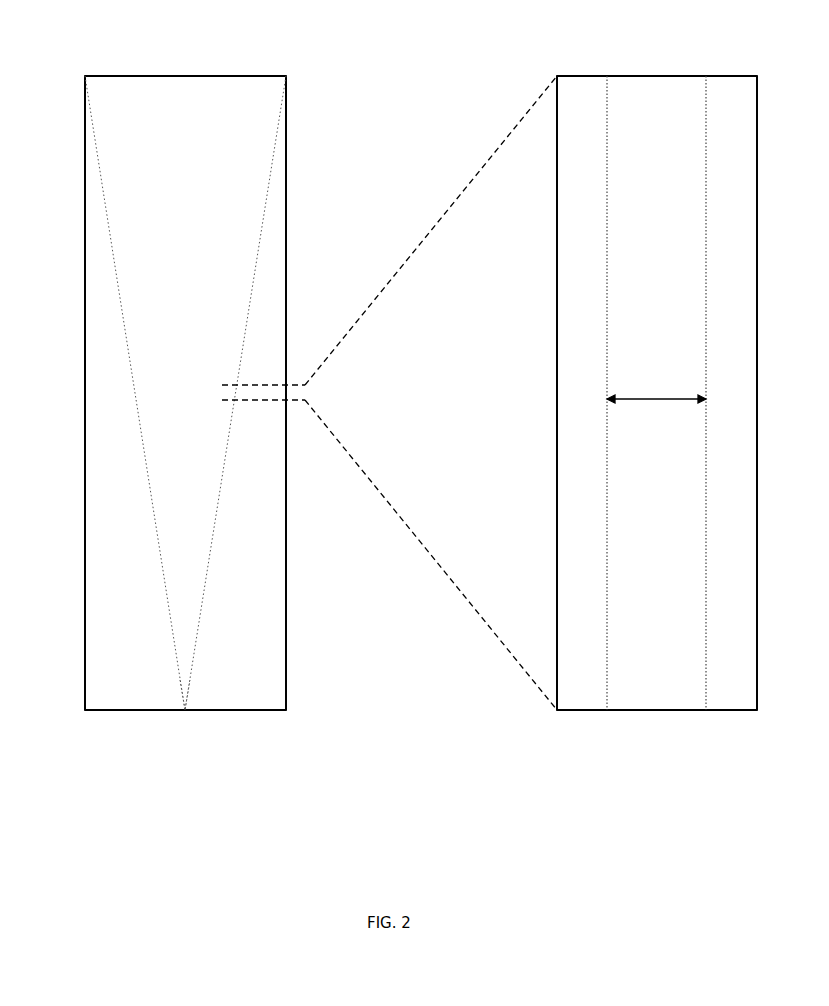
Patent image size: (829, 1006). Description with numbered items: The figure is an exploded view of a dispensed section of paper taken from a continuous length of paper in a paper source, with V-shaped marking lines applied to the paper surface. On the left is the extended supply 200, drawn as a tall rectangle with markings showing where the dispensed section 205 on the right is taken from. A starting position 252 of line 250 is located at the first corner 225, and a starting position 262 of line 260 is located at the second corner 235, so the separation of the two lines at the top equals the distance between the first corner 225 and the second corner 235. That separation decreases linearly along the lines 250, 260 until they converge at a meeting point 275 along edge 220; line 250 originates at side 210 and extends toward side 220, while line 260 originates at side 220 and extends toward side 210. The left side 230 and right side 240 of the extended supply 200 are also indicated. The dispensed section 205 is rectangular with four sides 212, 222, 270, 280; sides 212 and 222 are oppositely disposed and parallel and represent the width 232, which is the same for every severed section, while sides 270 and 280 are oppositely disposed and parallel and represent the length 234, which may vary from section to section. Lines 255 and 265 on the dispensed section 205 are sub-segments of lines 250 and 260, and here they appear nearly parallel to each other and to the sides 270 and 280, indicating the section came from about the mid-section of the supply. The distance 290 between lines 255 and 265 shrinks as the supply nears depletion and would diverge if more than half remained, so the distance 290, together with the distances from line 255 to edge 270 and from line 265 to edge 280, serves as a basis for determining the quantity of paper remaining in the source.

The extended supply 200 is at (80, 711).
The dispensed section 205 is at (555, 712).
The side 210 is at (148, 76).
The side 212 is at (660, 76).
The side 220 is at (143, 711).
The side 222 is at (590, 711).
The first corner 225 is at (85, 76).
The first side 230 is at (85, 235).
The width 232 is at (183, 76).
The length 234 is at (85, 395).
The second corner 235 is at (286, 76).
The second side 240 is at (286, 235).
The line 250 is at (123, 323).
The starting position 252 is at (85, 78).
The line 255 is at (607, 325).
The line 260 is at (247, 323).
The starting position 262 is at (286, 78).
The line 265 is at (706, 325).
The side 270 is at (557, 235).
The meeting point 275 is at (185, 711).
The side 280 is at (757, 235).
The distance 290 is at (660, 399).